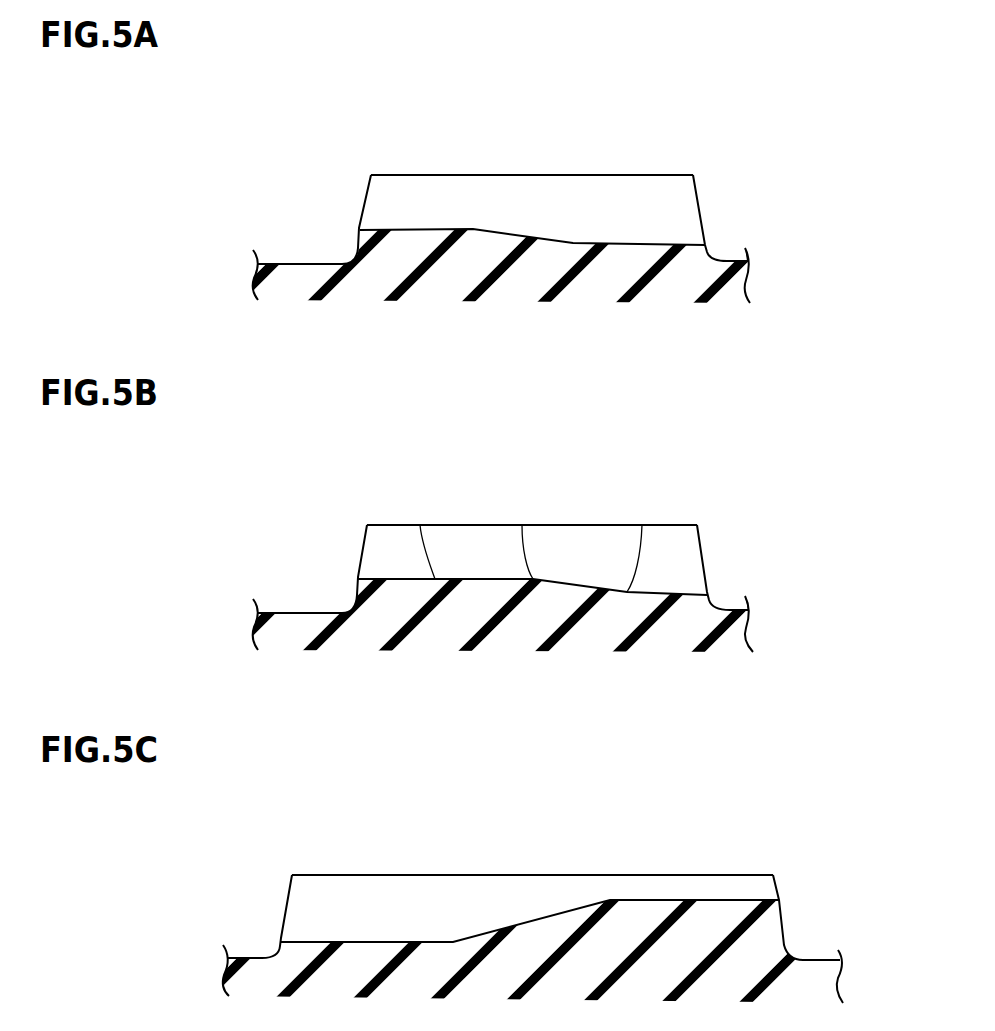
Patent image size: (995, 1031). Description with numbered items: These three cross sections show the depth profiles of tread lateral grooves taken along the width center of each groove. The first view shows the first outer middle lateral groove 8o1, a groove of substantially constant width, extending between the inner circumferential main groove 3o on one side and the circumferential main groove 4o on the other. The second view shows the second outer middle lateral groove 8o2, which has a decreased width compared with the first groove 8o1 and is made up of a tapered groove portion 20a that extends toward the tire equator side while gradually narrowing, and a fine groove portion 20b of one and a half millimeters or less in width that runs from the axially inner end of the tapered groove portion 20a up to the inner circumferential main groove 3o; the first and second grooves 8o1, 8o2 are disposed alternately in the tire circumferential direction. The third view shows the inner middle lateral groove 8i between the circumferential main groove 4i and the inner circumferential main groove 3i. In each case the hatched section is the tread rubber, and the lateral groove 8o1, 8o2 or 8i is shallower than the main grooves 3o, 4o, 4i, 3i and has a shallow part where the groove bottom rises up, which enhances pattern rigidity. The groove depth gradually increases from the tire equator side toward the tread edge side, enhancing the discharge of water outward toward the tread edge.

In FIG. 5A, the inner circumferential main groove 3o is at (310, 230).
In FIG. 5B, the inner circumferential main groove 3o is at (310, 579).
In FIG. 5A, the circumferential main groove 4o is at (728, 230).
In FIG. 5B, the circumferential main groove 4o is at (728, 579).
In FIG. 5A, the first outer middle lateral groove 8o1 is at (525, 167).
In FIG. 5B, the second outer middle lateral groove 8o2 is at (525, 518).
In FIG. 5B, the tapered groove portion 20a is at (642, 525).
In FIG. 5B, the fine groove portion 20b is at (420, 525).
In FIG. 5C, the inner middle lateral groove 8i is at (525, 867).
In FIG. 5C, the circumferential main groove 4i is at (249, 929).
In FIG. 5C, the inner circumferential main groove 3i is at (820, 930).